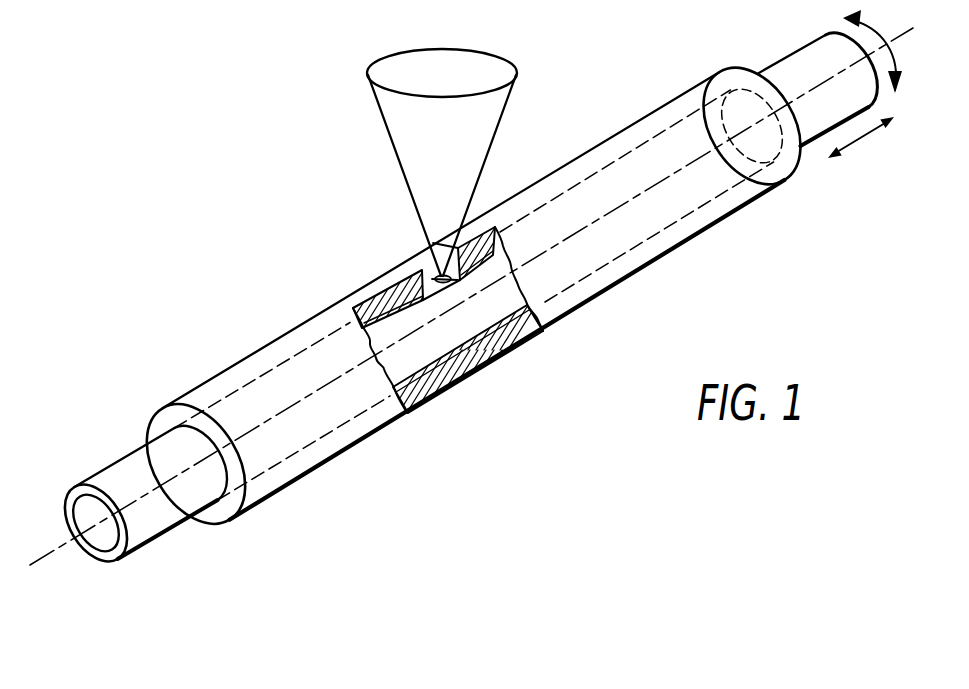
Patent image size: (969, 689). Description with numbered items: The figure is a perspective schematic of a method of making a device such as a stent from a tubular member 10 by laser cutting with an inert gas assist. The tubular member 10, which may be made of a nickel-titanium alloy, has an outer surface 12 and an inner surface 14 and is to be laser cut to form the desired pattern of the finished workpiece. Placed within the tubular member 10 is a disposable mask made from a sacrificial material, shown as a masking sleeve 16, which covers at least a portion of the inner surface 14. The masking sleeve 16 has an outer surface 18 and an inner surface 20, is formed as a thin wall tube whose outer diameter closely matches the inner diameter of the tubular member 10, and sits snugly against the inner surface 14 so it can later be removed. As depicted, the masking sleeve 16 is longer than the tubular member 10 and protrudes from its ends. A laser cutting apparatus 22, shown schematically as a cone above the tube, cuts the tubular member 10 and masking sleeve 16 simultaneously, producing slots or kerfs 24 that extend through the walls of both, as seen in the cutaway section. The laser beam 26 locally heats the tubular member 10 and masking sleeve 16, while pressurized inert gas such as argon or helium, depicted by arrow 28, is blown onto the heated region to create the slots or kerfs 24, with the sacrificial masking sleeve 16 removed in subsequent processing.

The tubular member 10 is at (743, 190).
The outer surface 12 is at (633, 148).
The inner surface 14 is at (477, 323).
The masking sleeve 16 is at (135, 463).
The outer surface 18 is at (173, 517).
The inner surface 20 is at (92, 540).
The laser cutting apparatus 22 is at (383, 118).
The slots or kerfs 24 is at (420, 259).
The laser beam 26 is at (539, 688).
The arrow 28 is at (614, 687).